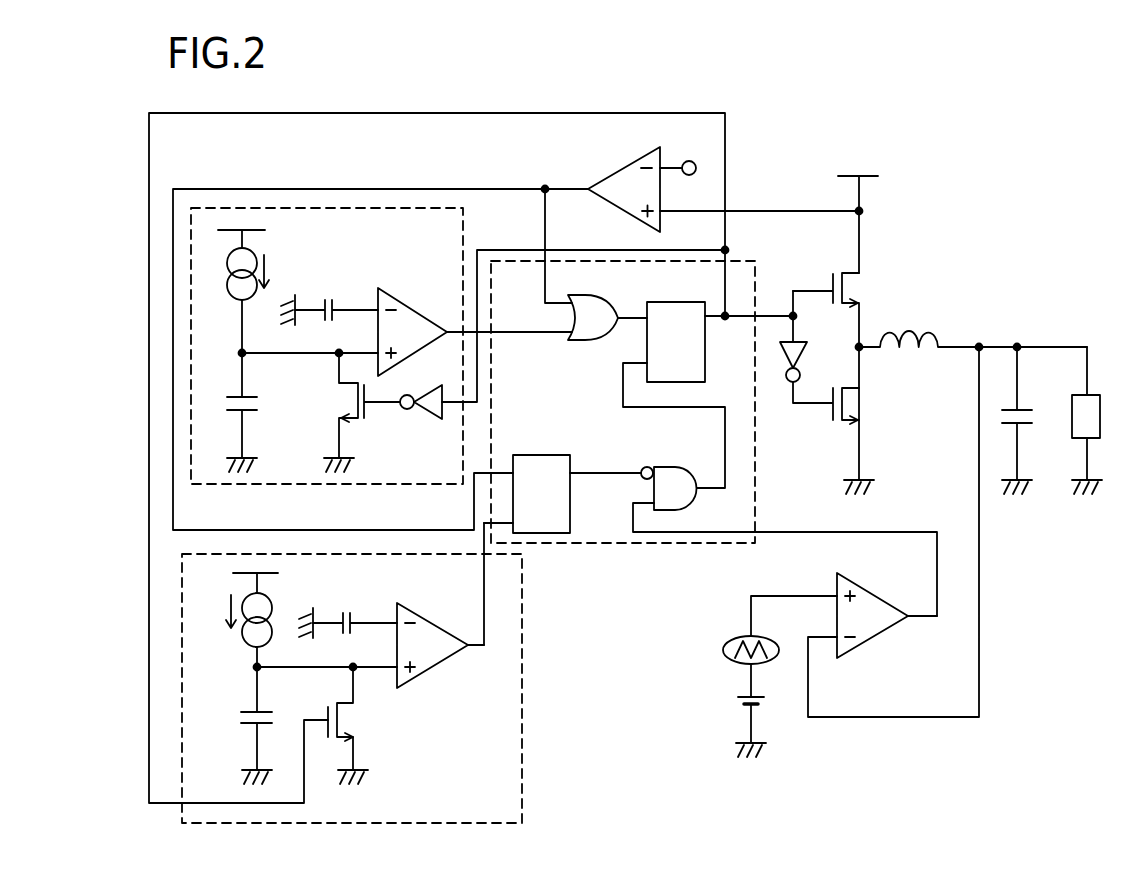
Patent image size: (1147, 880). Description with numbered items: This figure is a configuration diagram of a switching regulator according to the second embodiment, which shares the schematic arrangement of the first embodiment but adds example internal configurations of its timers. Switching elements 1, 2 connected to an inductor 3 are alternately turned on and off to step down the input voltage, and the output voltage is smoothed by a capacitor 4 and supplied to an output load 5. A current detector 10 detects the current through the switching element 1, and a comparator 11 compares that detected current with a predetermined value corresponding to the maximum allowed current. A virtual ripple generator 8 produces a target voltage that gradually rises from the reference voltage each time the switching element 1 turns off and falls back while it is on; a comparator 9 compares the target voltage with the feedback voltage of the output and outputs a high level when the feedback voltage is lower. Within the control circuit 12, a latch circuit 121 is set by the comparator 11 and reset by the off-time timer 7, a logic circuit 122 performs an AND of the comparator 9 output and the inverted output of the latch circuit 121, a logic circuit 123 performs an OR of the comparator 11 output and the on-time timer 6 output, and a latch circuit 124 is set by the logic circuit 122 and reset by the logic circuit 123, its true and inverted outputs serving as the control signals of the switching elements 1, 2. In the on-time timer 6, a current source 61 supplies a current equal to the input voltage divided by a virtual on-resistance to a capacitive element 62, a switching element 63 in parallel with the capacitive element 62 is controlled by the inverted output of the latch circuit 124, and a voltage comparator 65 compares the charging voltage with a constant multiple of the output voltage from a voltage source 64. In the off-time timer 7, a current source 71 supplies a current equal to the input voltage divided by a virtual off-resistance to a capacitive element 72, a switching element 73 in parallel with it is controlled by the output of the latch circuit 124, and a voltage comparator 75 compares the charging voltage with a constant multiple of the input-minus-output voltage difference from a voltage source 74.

The switching element 1 is at (831, 281).
The switching element 2 is at (833, 420).
The inductor 3 is at (905, 330).
The capacitor 4 is at (1024, 411).
The output load 5 is at (1100, 406).
The on-time timer 6 is at (463, 236).
The off-time timer 7 is at (523, 607).
The virtual ripple generator 8 is at (742, 636).
The comparator 9 is at (880, 637).
The current detector 10 is at (870, 212).
The comparator 11 is at (624, 170).
The control circuit 12 is at (756, 472).
The current source 61 is at (255, 235).
The capacitive element 62 is at (232, 396).
The switching element 63 is at (349, 420).
The voltage source 64 is at (334, 300).
The voltage comparator 65 is at (396, 301).
The current source 71 is at (266, 577).
The capacitive element 72 is at (246, 710).
The switching element 73 is at (345, 704).
The voltage source 74 is at (350, 614).
The voltage comparator 75 is at (430, 666).
The latch circuit 121 is at (571, 438).
The logic circuit 122 is at (675, 467).
The logic circuit 123 is at (592, 297).
The latch circuit 124 is at (637, 355).